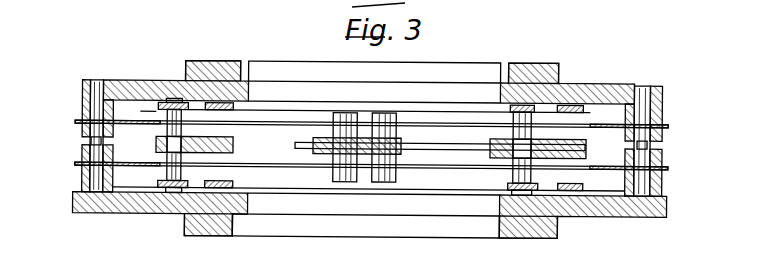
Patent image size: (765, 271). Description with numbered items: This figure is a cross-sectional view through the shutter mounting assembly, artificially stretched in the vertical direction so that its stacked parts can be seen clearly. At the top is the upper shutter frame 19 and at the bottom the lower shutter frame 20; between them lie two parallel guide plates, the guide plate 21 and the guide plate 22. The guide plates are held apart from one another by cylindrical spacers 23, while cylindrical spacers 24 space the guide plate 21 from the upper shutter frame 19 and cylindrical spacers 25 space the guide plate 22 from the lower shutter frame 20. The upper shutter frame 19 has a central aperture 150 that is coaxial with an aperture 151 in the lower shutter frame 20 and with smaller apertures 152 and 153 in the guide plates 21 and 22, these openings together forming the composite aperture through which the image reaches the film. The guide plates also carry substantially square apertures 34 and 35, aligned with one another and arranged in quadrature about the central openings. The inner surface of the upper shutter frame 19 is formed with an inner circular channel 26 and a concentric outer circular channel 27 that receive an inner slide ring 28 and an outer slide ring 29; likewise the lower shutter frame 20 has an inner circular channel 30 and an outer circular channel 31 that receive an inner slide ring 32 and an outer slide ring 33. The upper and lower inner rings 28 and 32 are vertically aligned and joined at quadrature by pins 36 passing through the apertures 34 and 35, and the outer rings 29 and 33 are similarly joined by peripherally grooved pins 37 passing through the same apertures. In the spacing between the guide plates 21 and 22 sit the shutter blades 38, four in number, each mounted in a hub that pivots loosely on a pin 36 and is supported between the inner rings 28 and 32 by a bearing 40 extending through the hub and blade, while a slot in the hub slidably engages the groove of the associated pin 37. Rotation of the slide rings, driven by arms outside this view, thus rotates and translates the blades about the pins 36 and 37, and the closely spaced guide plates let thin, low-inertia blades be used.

The upper shutter frame 19 is at (547, 63).
The lower shutter frame 20 is at (558, 231).
The guide plate 21 is at (77, 123).
The guide plate 22 is at (77, 166).
The cylindrical spacers 23 is at (80, 149).
The cylindrical spacers 24 is at (82, 102).
The cylindrical spacers 25 is at (82, 184).
The inner circular channel 26 is at (216, 101).
The outer circular channel 27 is at (172, 103).
The inner slide ring 28 is at (232, 105).
The outer slide ring 29 is at (145, 121).
The inner circular channel 30 is at (222, 200).
The outer circular channel 31 is at (173, 194).
The inner slide ring 32 is at (250, 193).
The outer slide ring 33 is at (150, 182).
The square apertures 34 is at (142, 120).
The square apertures 35 is at (132, 196).
The pins 36 is at (523, 194).
The peripherally grooved pins 37 is at (158, 152).
The shutter blades 38 is at (291, 138).
The bearing 40 is at (492, 187).
The aperture 150 is at (517, 108).
The aperture 151 is at (499, 196).
The aperture 152 is at (433, 140).
The aperture 153 is at (468, 163).